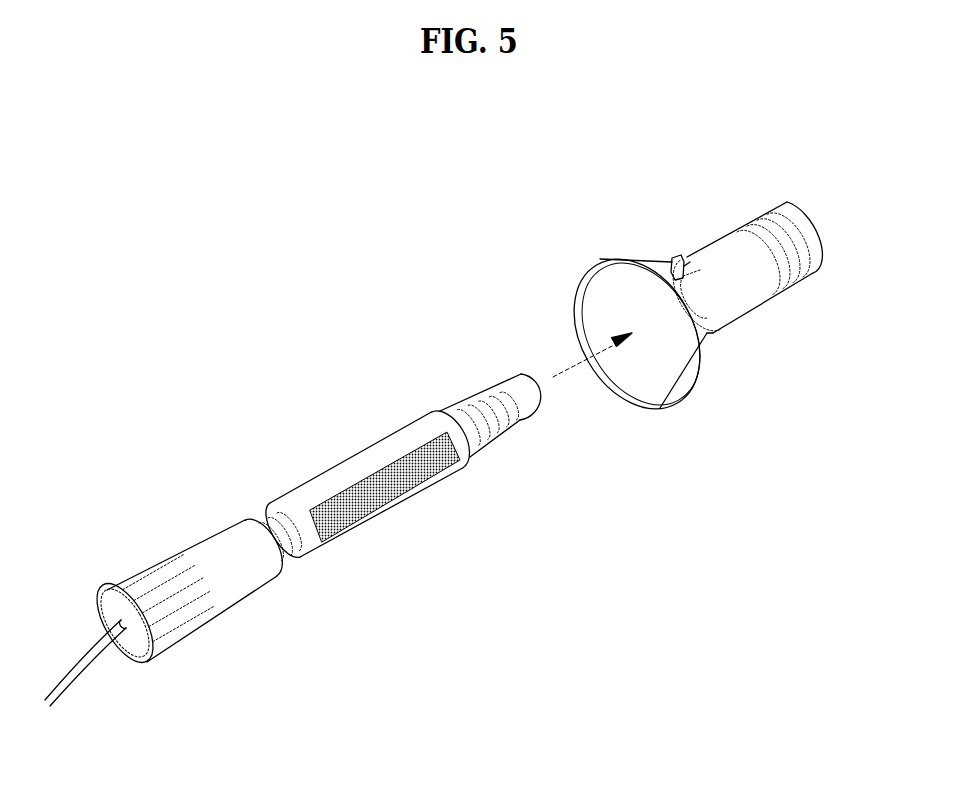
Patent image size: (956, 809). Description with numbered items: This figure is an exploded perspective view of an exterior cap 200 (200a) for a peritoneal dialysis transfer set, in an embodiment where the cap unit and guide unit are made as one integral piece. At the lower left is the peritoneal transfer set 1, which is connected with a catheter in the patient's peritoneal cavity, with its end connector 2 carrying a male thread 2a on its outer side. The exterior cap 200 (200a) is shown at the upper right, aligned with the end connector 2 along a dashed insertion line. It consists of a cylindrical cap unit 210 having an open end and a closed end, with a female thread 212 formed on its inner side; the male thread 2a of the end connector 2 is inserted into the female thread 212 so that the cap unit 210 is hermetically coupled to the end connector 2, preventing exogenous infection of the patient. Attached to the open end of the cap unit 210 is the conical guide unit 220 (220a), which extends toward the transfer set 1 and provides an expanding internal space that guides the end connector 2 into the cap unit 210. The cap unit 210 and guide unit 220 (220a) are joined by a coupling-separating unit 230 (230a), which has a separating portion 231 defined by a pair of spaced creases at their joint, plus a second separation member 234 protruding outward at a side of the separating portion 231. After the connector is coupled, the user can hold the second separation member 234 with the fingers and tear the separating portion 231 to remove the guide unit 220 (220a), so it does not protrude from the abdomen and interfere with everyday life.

The peritoneal transfer set 1 is at (170, 537).
The end connector 2 is at (332, 443).
The male thread 2a is at (475, 393).
The exterior cap 200 is at (711, 258).
The exterior cap 200a is at (711, 287).
The cap unit 210 is at (820, 280).
The female thread 212 is at (791, 216).
The guide unit 220 is at (623, 304).
The guide unit 220a is at (593, 255).
The coupling-separating unit 230 is at (745, 337).
The coupling-separating unit 230a is at (708, 333).
The separating portion 231 is at (718, 303).
The second separation member 234 is at (674, 257).